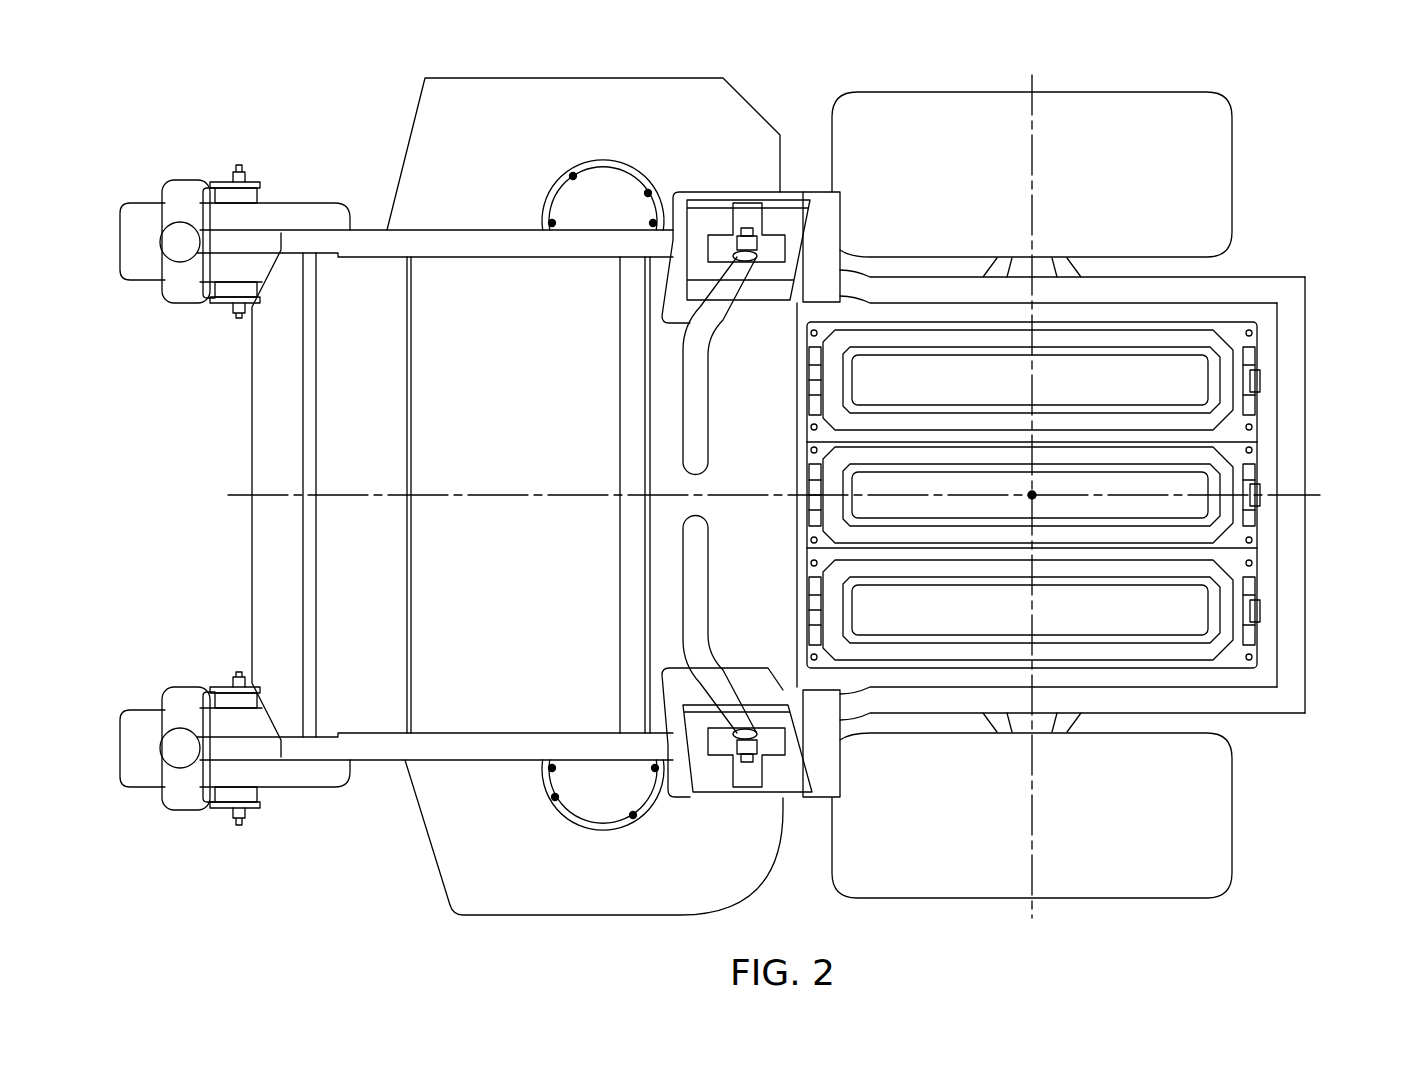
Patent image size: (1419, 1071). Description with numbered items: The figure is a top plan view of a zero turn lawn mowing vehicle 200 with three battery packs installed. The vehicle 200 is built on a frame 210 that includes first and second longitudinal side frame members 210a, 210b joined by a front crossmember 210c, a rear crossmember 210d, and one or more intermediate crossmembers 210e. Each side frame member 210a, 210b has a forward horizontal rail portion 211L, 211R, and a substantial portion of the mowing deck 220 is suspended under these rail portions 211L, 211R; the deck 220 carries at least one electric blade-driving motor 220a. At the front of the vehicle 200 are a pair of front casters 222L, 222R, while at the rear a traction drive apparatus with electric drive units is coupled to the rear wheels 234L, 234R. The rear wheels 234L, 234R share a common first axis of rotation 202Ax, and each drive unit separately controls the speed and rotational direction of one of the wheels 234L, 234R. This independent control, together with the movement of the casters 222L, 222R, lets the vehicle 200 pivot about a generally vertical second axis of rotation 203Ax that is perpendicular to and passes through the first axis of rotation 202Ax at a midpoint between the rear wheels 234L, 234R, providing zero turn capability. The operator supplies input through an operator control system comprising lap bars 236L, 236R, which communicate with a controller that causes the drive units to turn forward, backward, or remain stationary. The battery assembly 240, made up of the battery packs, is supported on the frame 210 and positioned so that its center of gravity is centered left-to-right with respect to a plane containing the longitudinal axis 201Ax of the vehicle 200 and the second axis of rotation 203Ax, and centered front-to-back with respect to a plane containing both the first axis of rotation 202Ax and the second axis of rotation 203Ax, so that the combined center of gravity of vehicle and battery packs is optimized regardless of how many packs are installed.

The ZT lawn mowing vehicle 200 is at (254, 128).
The longitudinal axis 201Ax is at (522, 492).
The first axis of rotation 202Ax is at (1032, 150).
The second axis of rotation 203Ax is at (1032, 495).
The frame 210 is at (222, 555).
The first longitudinal side frame member 210a is at (751, 725).
The second longitudinal side frame member 210b is at (751, 266).
The front crossmember 210c is at (258, 428).
The rear crossmember 210d is at (1300, 392).
The intermediate crossmember 210e is at (625, 613).
The forward horizontal rail portion 211R is at (435, 243).
The forward horizontal rail portion 211L is at (435, 750).
The mowing deck 220 is at (510, 156).
The electric blade-driving motor 220a is at (603, 178).
The front caster 222R is at (188, 292).
The front caster 222L is at (190, 696).
The rear wheel 234R is at (1165, 186).
The rear wheel 234L is at (1165, 827).
The lap bar 236R is at (705, 417).
The lap bar 236L is at (705, 580).
The battery assembly 240 is at (1276, 573).